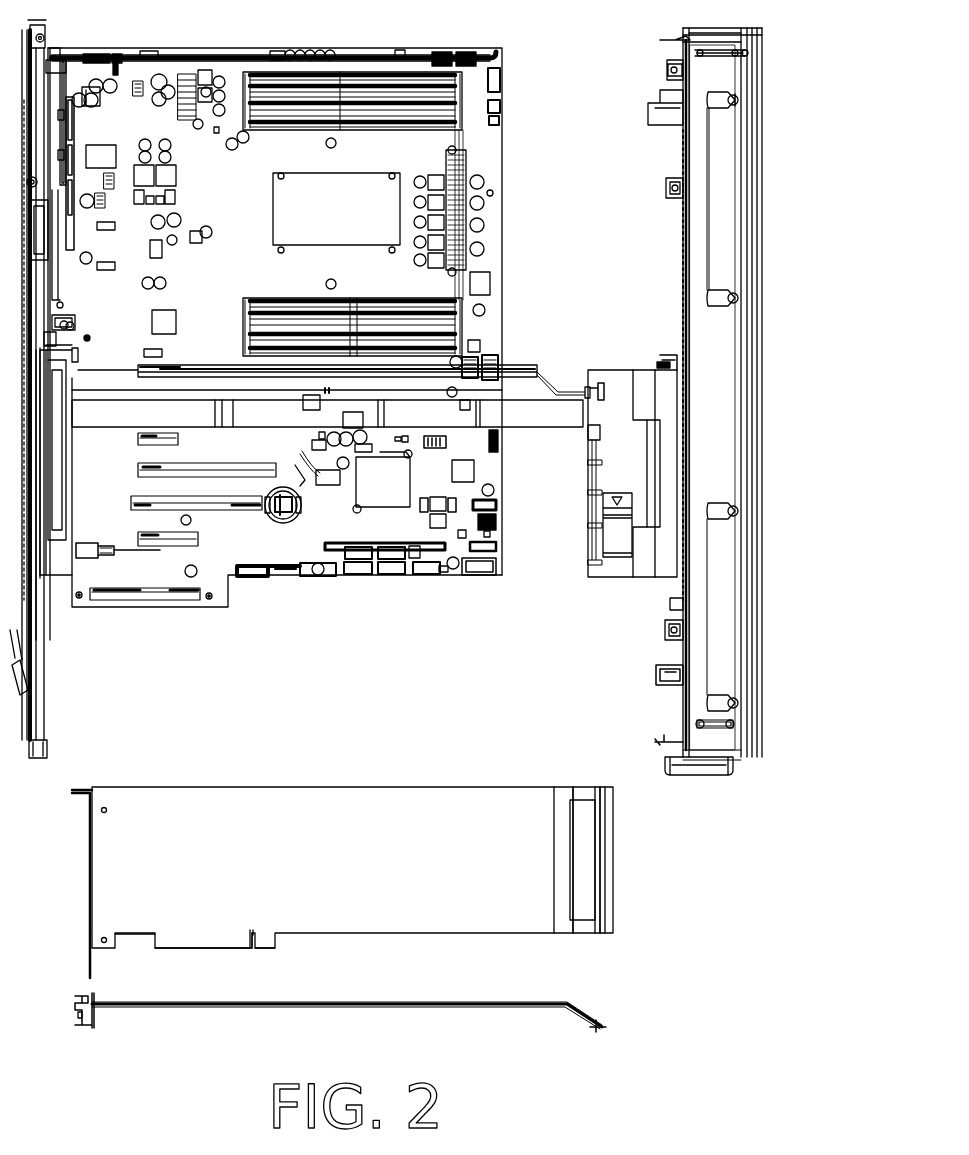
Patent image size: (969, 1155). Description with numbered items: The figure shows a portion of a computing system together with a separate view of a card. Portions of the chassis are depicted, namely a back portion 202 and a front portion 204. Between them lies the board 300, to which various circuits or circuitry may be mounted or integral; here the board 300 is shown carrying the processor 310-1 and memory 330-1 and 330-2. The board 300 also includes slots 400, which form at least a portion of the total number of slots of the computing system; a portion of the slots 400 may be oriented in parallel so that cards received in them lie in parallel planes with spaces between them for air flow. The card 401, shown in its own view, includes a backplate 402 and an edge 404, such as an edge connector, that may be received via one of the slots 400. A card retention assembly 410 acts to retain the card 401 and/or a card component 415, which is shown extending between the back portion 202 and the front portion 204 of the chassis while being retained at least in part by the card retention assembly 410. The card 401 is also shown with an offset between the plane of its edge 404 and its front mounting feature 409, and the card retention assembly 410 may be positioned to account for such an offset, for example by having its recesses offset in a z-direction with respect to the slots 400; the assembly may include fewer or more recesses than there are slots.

The back portion 202 is at (50, 660).
The front portion 204 is at (674, 690).
The board 300 is at (498, 248).
The processor 310-1 is at (336, 213).
The memory 330-1 is at (455, 313).
The memory 330-2 is at (463, 128).
The slots 400 is at (243, 545).
The card 401 is at (523, 378).
The backplate 402 is at (85, 792).
The edge 404 is at (203, 943).
The bracket tail / offset tab 409 is at (600, 787).
The card retention assembly 410 is at (578, 596).
The card component 415 is at (525, 410).